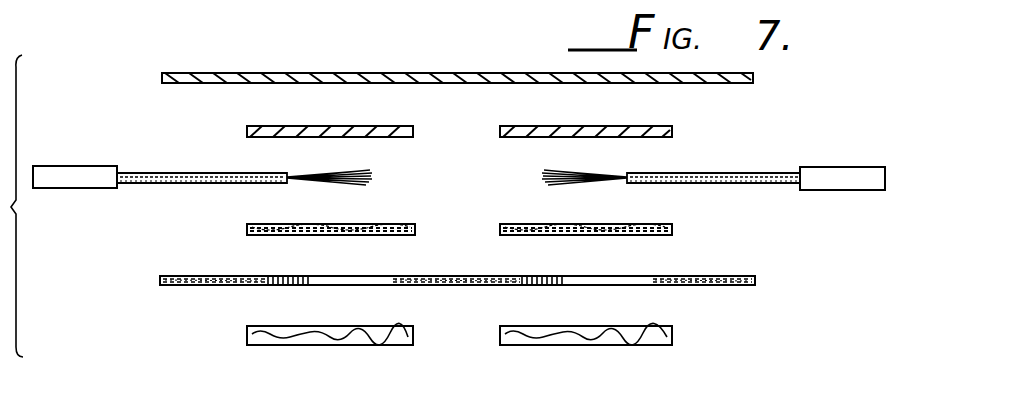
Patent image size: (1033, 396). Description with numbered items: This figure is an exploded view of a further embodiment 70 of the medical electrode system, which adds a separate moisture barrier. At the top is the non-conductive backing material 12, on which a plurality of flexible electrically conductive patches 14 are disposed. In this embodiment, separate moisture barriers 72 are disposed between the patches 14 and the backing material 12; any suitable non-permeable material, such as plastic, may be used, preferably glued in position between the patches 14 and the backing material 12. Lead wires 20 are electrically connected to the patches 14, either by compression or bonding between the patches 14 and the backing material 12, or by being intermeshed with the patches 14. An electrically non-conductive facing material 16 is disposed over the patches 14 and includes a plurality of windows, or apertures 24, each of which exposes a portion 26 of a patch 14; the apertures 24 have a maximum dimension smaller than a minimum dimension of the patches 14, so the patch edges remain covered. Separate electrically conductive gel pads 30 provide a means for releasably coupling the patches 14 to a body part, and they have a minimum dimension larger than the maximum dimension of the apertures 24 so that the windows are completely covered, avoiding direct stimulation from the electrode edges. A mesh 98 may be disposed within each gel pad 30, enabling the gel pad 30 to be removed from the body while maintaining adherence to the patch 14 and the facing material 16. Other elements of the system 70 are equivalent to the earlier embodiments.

The further embodiment 70 is at (97, 53).
The non-conductive backing material 12 is at (259, 73).
The moisture barriers 72 is at (255, 126).
The lead wires 20 is at (80, 165).
The flexible electrically conductive patches 14 is at (296, 224).
The portion of the patches 26 is at (276, 236).
The electrically non-conductive facing material 16 is at (720, 285).
The apertures 24 is at (395, 280).
The electrically conductive gel pads 30 is at (370, 343).
The mesh 98 is at (293, 333).